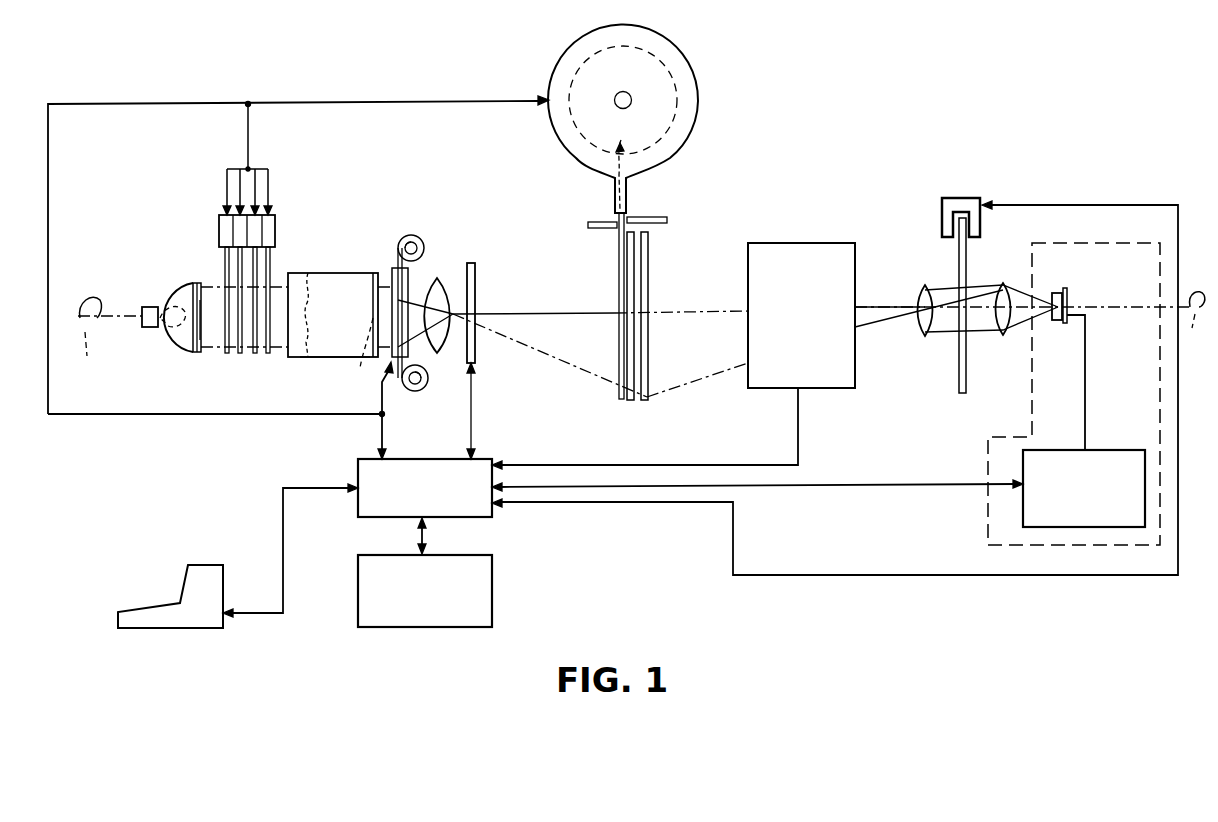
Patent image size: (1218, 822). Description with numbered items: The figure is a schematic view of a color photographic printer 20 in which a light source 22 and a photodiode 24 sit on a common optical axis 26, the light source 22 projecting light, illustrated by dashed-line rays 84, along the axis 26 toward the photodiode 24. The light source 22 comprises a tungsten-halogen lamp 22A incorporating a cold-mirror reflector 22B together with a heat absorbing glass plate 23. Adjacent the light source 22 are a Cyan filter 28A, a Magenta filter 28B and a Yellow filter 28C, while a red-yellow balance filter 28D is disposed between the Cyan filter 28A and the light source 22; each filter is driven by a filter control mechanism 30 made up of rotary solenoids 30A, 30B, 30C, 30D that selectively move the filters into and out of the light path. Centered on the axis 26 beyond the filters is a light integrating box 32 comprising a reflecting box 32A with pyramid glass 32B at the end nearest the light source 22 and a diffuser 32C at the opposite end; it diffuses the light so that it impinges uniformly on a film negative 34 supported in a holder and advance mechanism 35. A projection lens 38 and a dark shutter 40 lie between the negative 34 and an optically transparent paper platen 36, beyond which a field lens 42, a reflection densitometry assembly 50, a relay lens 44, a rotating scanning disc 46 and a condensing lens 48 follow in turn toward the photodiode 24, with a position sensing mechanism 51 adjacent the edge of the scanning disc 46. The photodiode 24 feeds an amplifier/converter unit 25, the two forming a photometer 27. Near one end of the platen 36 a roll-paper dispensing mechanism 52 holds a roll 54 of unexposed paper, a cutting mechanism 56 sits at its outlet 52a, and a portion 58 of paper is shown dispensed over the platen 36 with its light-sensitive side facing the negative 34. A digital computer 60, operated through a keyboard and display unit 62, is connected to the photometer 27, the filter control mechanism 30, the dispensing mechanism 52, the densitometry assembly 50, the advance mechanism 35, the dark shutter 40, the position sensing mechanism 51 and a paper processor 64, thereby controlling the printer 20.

The color photographic printer 20 is at (772, 164).
The light source 22 is at (154, 293).
The tungsten-halogen lamp 22A is at (175, 347).
The cold-mirror reflector 22B is at (180, 290).
The heat absorbing glass plate 23 is at (203, 350).
The photodiode 24 is at (1058, 290).
The amplifier/converter unit 25 is at (1053, 458).
The optical axis 26 is at (647, 336).
The photometer 27 is at (1006, 445).
The Cyan filter 28A is at (240, 356).
The Magenta filter 28B is at (255, 356).
The Yellow filter 28C is at (268, 356).
The red-yellow balance filter 28D is at (226, 310).
The filter control mechanism 30 is at (290, 203).
The rotary solenoid 30A is at (228, 223).
The rotary solenoid 30B is at (258, 236).
The rotary solenoid 30C is at (270, 222).
The rotary solenoid 30D is at (226, 236).
The light integrating box 32 is at (367, 262).
The reflecting box 32A is at (335, 359).
The pyramid glass 32B is at (321, 302).
The diffuser 32C is at (368, 354).
The film negative 34 is at (402, 276).
The holder and advance mechanism 35 is at (421, 372).
The paper platen 36 is at (631, 402).
The projection lens 38 is at (440, 354).
The dark shutter 40 is at (471, 262).
The field lens 42 is at (645, 402).
The relay lens 44 is at (925, 284).
The rotating scanning disc 46 is at (958, 350).
The condensing lens 48 is at (1003, 282).
The reflection densitometry assembly 50 is at (780, 236).
The position sensing mechanism 51 is at (950, 188).
The roll-paper dispensing mechanism 52 is at (699, 104).
The outlet 52a is at (614, 192).
The roll of unexposed photographic paper 54 is at (676, 72).
The cutting mechanism 56 is at (652, 216).
The portion of unexposed photographic paper 58 is at (618, 356).
The digital computer 60 is at (372, 513).
The keyboard and display unit 62 is at (164, 612).
The paper processor 64 is at (382, 628).
The dashed-line rays 84 is at (514, 308).